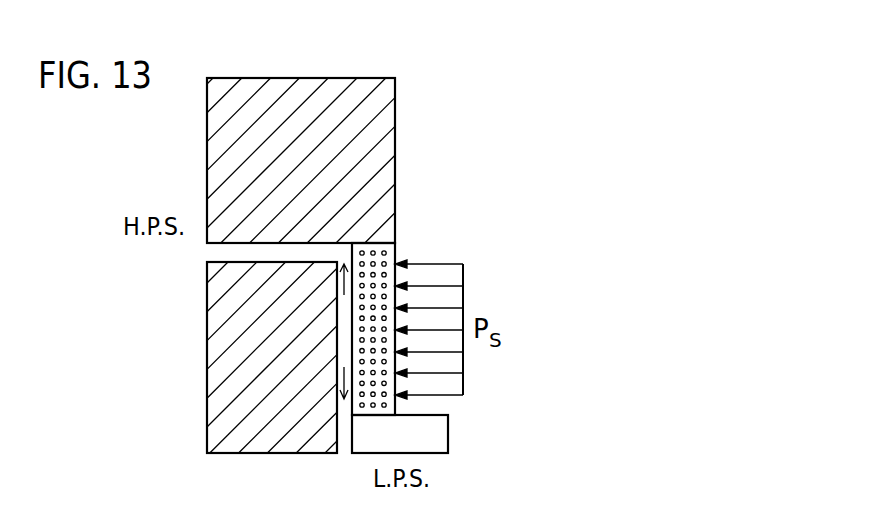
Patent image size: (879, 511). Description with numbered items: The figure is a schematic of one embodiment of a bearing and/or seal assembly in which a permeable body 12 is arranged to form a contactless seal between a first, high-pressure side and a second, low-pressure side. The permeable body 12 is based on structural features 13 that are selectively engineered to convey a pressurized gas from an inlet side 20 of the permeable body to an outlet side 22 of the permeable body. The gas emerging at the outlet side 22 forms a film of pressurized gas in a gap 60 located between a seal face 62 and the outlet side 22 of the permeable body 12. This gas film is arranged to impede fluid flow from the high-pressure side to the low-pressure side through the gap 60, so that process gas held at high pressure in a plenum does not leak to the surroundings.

The permeable body 12 is at (378, 254).
The structural features 13 is at (362, 329).
The gap 60 is at (344, 346).
The seal face 62 is at (337, 377).
The outlet side 22 is at (352, 405).
The inlet side 20 is at (397, 408).